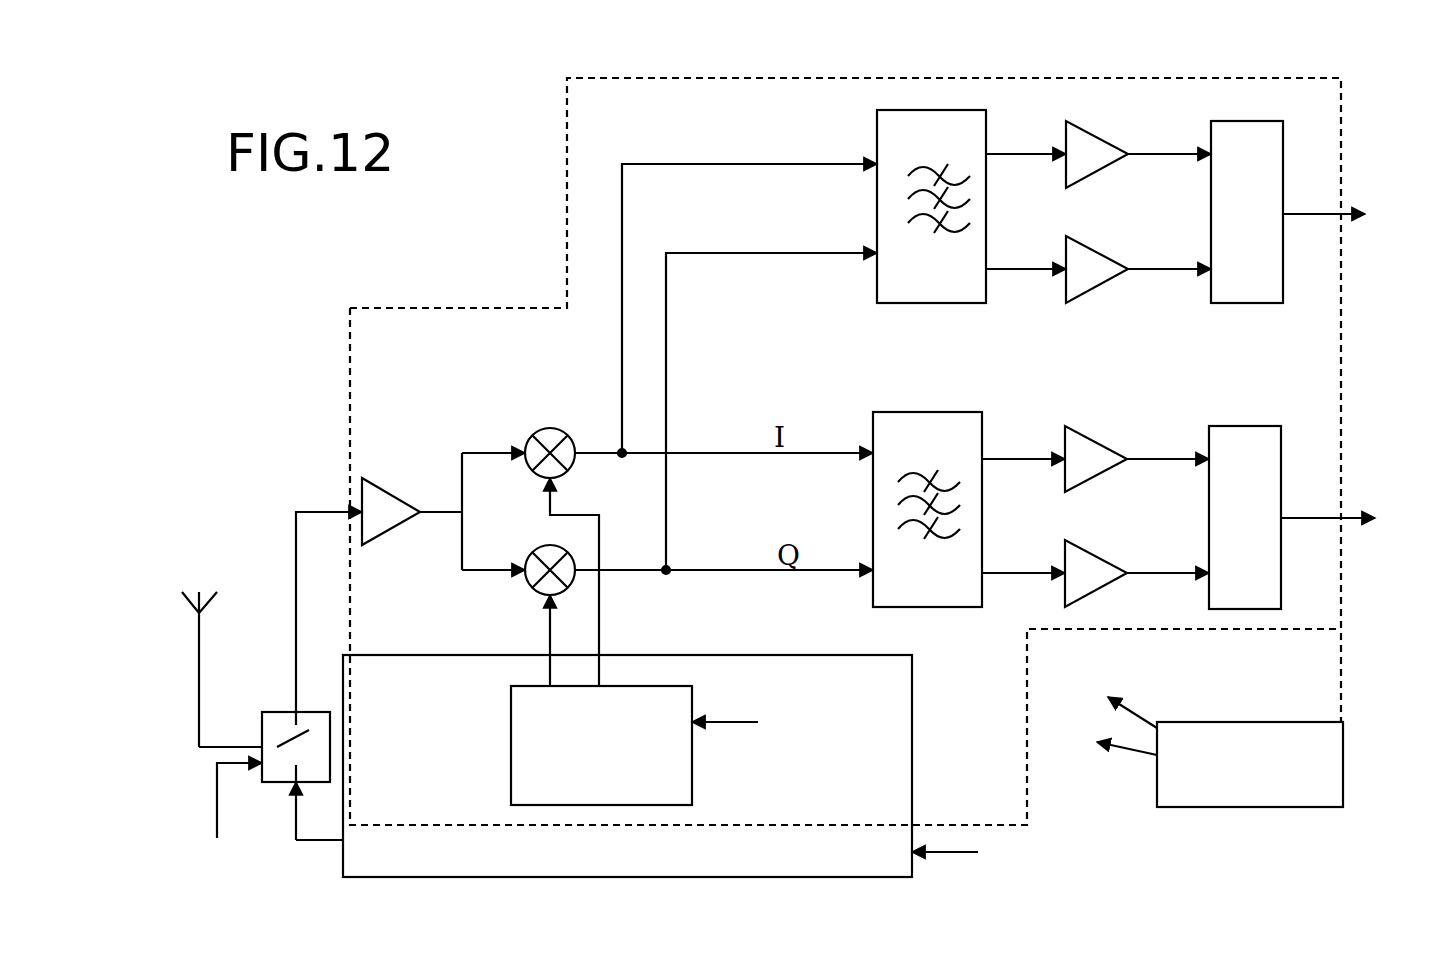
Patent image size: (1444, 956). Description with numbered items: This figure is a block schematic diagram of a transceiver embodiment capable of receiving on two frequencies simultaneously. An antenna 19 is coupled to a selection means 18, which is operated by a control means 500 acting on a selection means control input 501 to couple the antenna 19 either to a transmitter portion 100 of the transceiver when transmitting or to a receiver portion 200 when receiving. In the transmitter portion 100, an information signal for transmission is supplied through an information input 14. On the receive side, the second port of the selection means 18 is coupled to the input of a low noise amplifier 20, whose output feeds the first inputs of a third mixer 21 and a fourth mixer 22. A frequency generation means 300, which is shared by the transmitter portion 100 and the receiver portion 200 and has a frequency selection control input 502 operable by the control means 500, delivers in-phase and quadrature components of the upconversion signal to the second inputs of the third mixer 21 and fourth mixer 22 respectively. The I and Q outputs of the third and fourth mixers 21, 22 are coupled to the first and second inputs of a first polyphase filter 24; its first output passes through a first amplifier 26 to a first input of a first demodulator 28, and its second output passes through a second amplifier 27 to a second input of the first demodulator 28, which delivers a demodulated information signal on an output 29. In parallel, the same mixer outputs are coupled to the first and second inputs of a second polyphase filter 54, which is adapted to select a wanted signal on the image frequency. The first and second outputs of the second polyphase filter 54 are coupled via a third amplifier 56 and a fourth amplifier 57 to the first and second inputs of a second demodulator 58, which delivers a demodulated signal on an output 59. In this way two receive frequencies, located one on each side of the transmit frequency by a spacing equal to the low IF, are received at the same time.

The information input 14 is at (937, 852).
The selection means 18 is at (279, 712).
The antenna 19 is at (213, 592).
The low noise amplifier 20 is at (387, 486).
The third mixer 21 is at (545, 428).
The fourth mixer 22 is at (525, 583).
The first polyphase filter 24 is at (920, 412).
The first amplifier 26 is at (1087, 437).
The second amplifier 27 is at (1087, 550).
The first demodulator 28 is at (1245, 517).
The output 29 is at (1320, 518).
The second polyphase filter 54 is at (877, 133).
The third amplifier 56 is at (1087, 132).
The fourth amplifier 57 is at (1093, 290).
The second demodulator 58 is at (1247, 212).
The output 59 is at (1322, 214).
The transmitter portion 100 is at (342, 860).
The receiver portion 200 is at (1342, 363).
The frequency generation means 300 is at (692, 779).
The control means 500 is at (1250, 764).
The selection means control input 501 is at (214, 805).
The frequency selection control input 502 is at (730, 710).